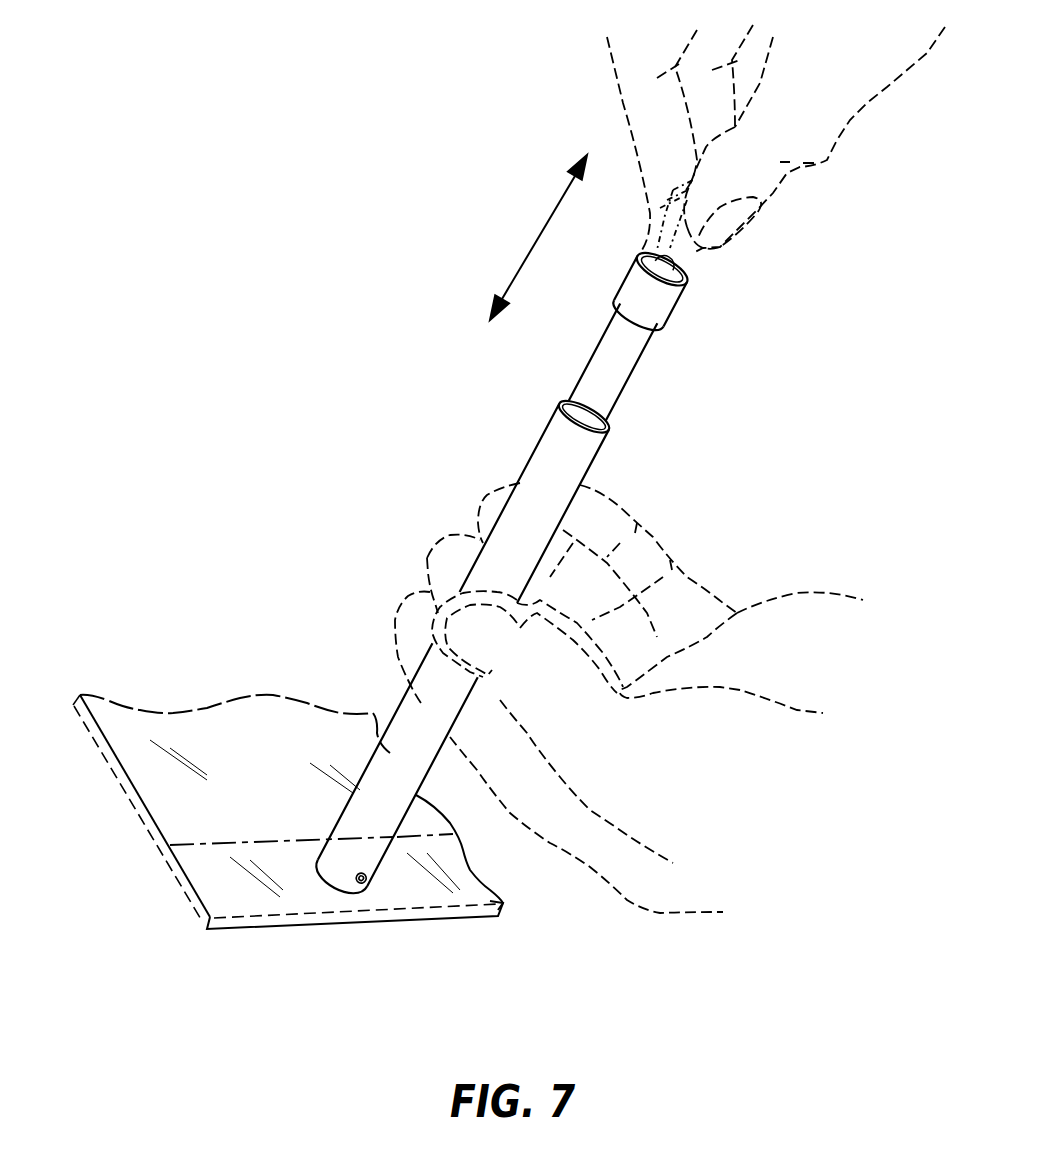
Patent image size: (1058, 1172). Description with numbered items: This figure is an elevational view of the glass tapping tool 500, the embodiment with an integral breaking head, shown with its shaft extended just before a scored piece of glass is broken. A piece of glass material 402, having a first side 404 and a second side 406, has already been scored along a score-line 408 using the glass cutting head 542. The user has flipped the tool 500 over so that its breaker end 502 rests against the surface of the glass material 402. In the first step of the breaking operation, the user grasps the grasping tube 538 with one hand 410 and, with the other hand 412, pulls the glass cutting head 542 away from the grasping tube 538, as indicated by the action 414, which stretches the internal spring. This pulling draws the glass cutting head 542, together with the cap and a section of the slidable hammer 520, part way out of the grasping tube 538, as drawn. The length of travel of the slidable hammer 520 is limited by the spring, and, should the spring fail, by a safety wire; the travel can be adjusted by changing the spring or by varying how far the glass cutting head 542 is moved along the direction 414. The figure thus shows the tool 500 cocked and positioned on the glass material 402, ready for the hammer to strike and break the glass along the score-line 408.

The glass tapping tool 500 is at (629, 1057).
The slidable hammer 520 is at (610, 336).
The grasping tube 538 is at (547, 443).
The glass cutting head 542 is at (680, 247).
The breaker end 502 is at (350, 897).
The action (direction of travel) 414 is at (535, 247).
The other hand 412 is at (623, 103).
The hand 410 is at (427, 558).
The second side 406 is at (112, 777).
The score-line 408 is at (213, 841).
The glass material 402 is at (197, 917).
The first side 404 is at (263, 903).